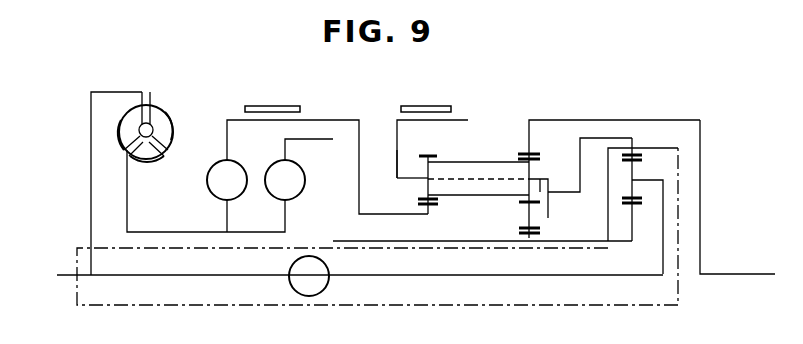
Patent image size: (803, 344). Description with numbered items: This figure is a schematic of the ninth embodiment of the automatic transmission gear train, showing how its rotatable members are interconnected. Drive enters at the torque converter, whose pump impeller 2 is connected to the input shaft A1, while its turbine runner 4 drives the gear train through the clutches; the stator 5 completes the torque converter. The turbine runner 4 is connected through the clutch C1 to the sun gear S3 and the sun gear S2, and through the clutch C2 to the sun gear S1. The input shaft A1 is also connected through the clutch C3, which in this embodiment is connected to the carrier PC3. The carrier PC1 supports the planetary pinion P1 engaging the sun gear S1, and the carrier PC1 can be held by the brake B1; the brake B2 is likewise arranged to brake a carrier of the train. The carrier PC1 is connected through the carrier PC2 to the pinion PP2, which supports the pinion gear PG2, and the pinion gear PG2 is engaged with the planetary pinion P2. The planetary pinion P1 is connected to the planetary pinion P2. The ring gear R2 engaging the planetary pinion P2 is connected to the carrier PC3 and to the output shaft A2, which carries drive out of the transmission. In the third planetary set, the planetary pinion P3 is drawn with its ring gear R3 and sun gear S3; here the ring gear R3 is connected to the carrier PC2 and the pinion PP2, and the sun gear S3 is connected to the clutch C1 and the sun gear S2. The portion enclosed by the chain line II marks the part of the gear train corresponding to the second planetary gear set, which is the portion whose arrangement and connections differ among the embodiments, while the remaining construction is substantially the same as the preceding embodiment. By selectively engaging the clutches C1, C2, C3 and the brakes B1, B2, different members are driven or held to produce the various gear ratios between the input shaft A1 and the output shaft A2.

The pump impeller 2 is at (171, 136).
The turbine runner 4 is at (119, 148).
The stator 5 is at (148, 161).
The clutch C1 is at (285, 180).
The clutch C2 is at (227, 180).
The clutch C3 is at (309, 276).
The brake B1 is at (429, 106).
The brake B2 is at (272, 97).
The carrier PC1 is at (410, 178).
The planetary pinion P1 is at (440, 162).
The sun gear S1 is at (428, 214).
The ring gear R2 is at (528, 135).
The planetary pinion P2 is at (531, 168).
The pinion gear PG2 is at (528, 203).
The carrier PC2 is at (541, 179).
The pinion PP2 is at (548, 218).
The sun gear S2 is at (527, 238).
The ring gear R3 is at (636, 138).
The planetary pinion P3 is at (632, 167).
The carrier PC3 is at (658, 178).
The sun gear S3 is at (636, 228).
The input shaft A1 is at (76, 276).
The output shaft A2 is at (700, 208).
The chain line II is at (678, 284).